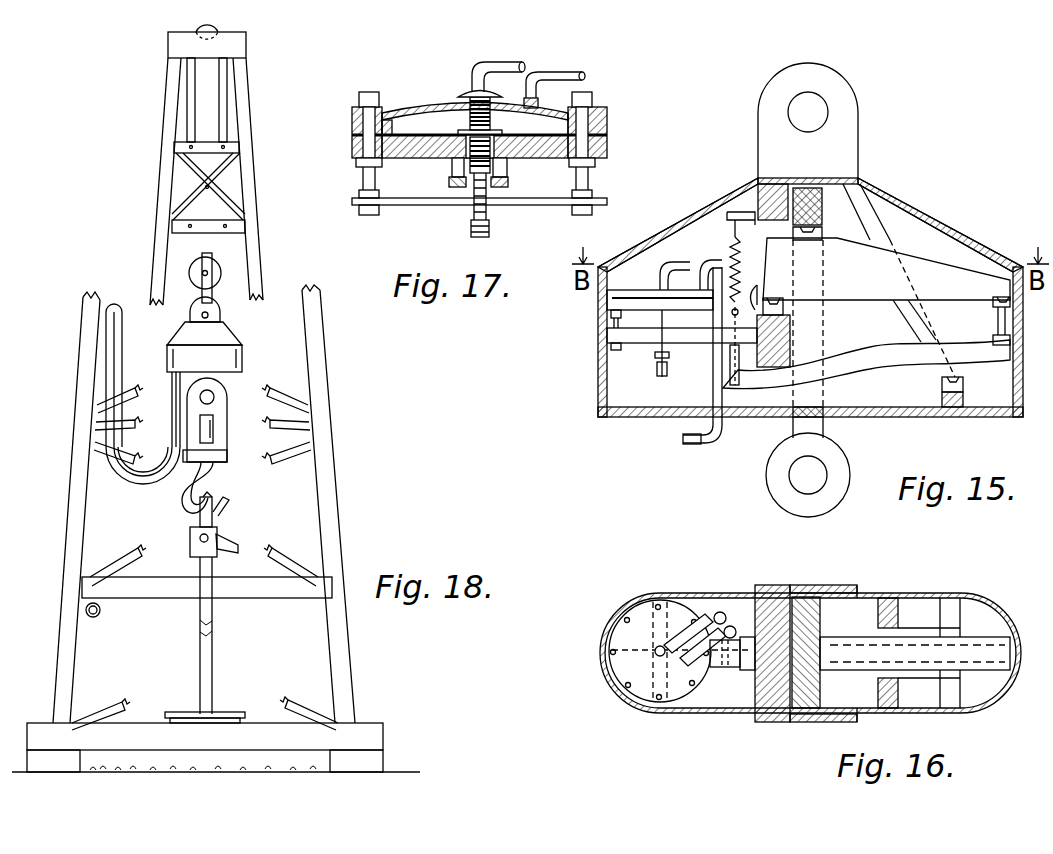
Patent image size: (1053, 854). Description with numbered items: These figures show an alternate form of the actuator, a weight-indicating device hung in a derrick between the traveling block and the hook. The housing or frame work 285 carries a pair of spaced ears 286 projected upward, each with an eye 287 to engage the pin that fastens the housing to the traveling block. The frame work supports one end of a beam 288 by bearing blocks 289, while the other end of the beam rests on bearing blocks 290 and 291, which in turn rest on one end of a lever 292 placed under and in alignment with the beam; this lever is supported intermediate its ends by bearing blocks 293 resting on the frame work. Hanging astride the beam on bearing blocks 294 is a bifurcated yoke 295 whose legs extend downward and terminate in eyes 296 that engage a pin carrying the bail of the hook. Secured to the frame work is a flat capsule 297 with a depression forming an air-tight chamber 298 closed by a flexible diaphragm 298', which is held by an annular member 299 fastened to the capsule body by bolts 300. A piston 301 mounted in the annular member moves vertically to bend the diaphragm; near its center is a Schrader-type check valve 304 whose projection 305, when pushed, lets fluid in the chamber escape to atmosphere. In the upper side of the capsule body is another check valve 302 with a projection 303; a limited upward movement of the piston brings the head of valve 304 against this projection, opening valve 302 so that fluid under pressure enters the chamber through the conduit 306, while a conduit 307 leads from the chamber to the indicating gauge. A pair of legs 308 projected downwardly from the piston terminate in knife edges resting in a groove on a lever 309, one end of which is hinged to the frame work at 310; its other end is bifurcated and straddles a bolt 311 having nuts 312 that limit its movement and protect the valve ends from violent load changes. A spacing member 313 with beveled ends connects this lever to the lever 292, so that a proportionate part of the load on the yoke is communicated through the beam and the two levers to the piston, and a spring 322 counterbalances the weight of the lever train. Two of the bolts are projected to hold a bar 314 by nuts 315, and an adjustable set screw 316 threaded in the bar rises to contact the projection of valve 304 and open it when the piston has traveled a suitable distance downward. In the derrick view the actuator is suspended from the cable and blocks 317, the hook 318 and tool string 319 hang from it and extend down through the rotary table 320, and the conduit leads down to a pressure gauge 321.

In FIG. 18, the housing or frame work 285 is at (204, 334).
In FIG. 15, the housing or frame work 285 is at (788, 345).
In FIG. 16, the housing or frame work 285 is at (772, 596).
In FIG. 15, the spaced ears 286 is at (808, 123).
In FIG. 15, the eye 287 is at (828, 112).
In FIG. 15, the beam 288 is at (886, 322).
In FIG. 16, the beam 288 is at (915, 653).
In FIG. 15, the bearing blocks 289 is at (792, 312).
In FIG. 15, the bearing block 290 is at (989, 294).
In FIG. 15, the bearing block 291 is at (1000, 325).
In FIG. 15, the lever 292 is at (866, 344).
In FIG. 15, the bearing blocks 293 is at (963, 387).
In FIG. 15, the bearing blocks 294 is at (823, 227).
In FIG. 15, the bifurcated yoke 295 is at (823, 205).
In FIG. 16, the bifurcated yoke 295 is at (843, 594).
In FIG. 15, the eyes 296 is at (798, 472).
In FIG. 17, the flat capsule 297 is at (352, 120).
In FIG. 15, the flat capsule 297 is at (610, 293).
In FIG. 16, the flat capsule 297 is at (622, 628).
In FIG. 17, the air-tight chamber 298 is at (481, 88).
In FIG. 17, the flexible diaphragm 298' is at (381, 98).
In FIG. 17, the annular member 299 is at (607, 146).
In FIG. 17, the bolts 300 is at (362, 178).
In FIG. 17, the piston 301 is at (530, 150).
In FIG. 17, the check valve 302 is at (473, 110).
In FIG. 17, the projection of the valve core 303 is at (470, 120).
In FIG. 17, the check valve 304 is at (467, 155).
In FIG. 17, the projection of the valve core 305 is at (482, 178).
In FIG. 17, the conduit 306 is at (510, 62).
In FIG. 15, the conduit 306 is at (682, 270).
In FIG. 16, the conduit 306 is at (672, 642).
In FIG. 18, the conduit 307 is at (119, 479).
In FIG. 17, the conduit 307 is at (586, 77).
In FIG. 15, the conduit 307 is at (712, 444).
In FIG. 16, the conduit 307 is at (707, 640).
In FIG. 17, the legs 308 is at (465, 157).
In FIG. 17, the lever 309 is at (460, 187).
In FIG. 15, the lever 309 is at (647, 333).
In FIG. 16, the lever 309 is at (722, 664).
In FIG. 15, the hinge 310 is at (776, 290).
In FIG. 15, the bolt 311 is at (613, 319).
In FIG. 15, the nuts 312 is at (613, 338).
In FIG. 15, the spacing member 313 is at (728, 358).
In FIG. 17, the bar 314 is at (607, 201).
In FIG. 17, the nuts 315 is at (358, 208).
In FIG. 17, the adjustable set screw 316 is at (490, 228).
In FIG. 15, the adjustable set screw 316 is at (657, 363).
In FIG. 18, the cable and blocks 317 is at (222, 268).
In FIG. 18, the hook 318 is at (209, 471).
In FIG. 18, the tool string 319 is at (213, 620).
In FIG. 18, the rotary table 320 is at (226, 712).
In FIG. 18, the pressure gauge 321 is at (99, 615).
In FIG. 15, the spring 322 is at (730, 244).